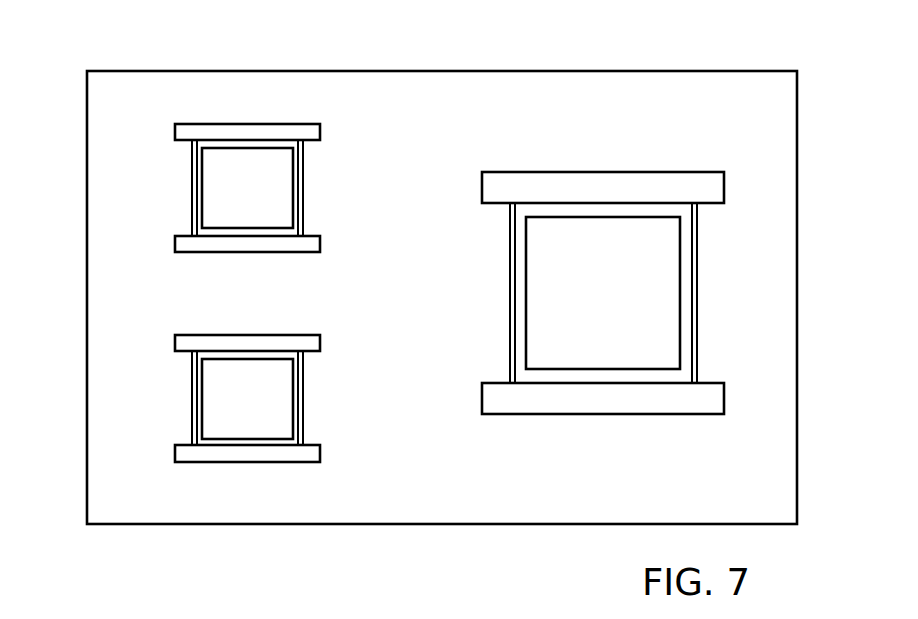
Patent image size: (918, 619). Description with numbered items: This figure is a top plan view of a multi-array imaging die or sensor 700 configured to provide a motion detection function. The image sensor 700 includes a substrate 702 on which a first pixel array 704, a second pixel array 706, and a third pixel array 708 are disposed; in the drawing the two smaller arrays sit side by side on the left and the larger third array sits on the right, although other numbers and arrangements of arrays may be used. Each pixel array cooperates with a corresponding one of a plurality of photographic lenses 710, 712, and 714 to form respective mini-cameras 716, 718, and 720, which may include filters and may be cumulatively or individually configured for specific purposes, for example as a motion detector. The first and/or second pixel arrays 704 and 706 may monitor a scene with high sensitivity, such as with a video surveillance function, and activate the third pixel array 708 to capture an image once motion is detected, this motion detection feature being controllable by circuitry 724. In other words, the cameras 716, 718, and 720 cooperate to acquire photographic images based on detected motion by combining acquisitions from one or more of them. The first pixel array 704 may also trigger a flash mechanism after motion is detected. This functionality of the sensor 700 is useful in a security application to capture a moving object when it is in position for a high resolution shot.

The multi-array imaging die or sensor 700 is at (266, 35).
The substrate 702 is at (573, 80).
The first pixel array 704 is at (272, 200).
The second pixel array 706 is at (272, 410).
The third pixel array 708 is at (634, 306).
The photographic lens 710 is at (303, 200).
The photographic lens 712 is at (303, 413).
The photographic lens 714 is at (697, 338).
The mini-camera 716 is at (330, 153).
The mini-camera 718 is at (330, 365).
The mini-camera 720 is at (714, 270).
The circuitry 724 is at (257, 124).